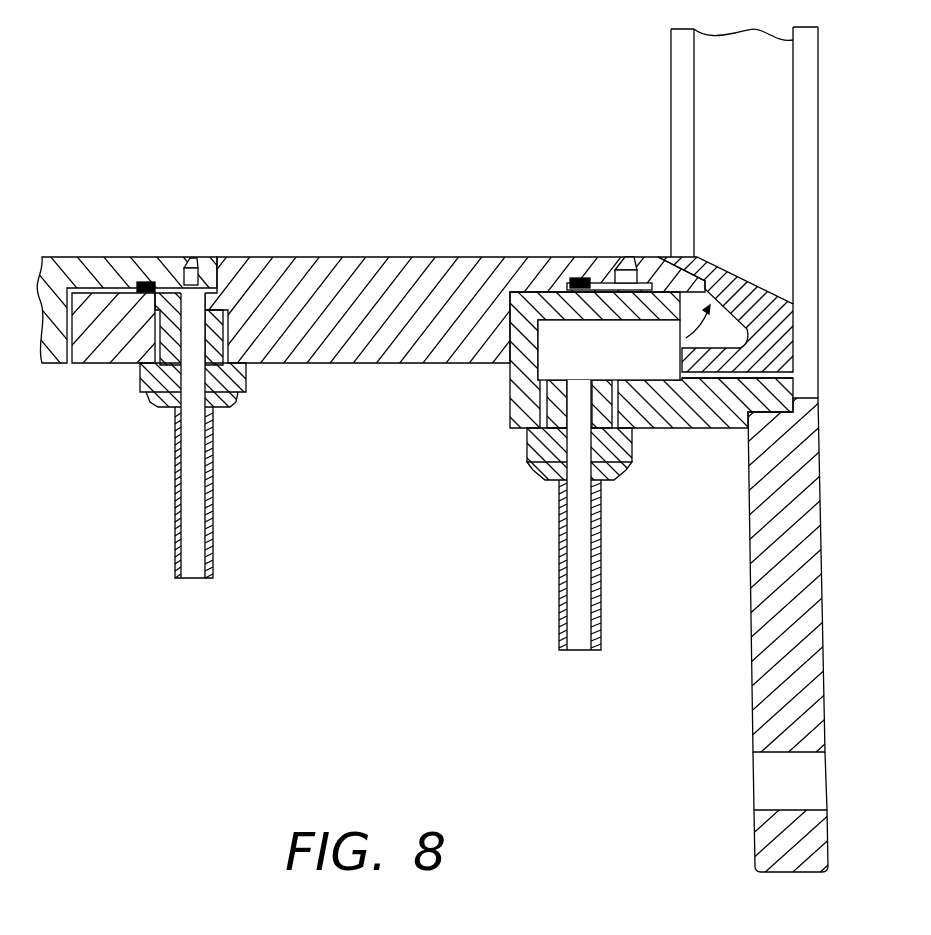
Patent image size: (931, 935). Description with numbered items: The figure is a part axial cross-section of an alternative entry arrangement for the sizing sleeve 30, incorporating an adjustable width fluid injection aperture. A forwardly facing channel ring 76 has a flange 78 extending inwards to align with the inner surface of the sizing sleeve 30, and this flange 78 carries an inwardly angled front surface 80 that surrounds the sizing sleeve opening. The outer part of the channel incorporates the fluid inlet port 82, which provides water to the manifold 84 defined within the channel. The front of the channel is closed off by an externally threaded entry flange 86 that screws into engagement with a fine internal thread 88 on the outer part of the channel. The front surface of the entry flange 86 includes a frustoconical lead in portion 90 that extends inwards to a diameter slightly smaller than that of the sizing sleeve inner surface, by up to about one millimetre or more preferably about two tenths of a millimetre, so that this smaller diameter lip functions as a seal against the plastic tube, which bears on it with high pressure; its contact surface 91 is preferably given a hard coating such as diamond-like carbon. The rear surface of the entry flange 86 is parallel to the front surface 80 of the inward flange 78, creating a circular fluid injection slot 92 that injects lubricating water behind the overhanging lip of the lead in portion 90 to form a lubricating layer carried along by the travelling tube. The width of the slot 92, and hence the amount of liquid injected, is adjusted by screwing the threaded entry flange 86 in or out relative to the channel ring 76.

The sizing sleeve 30 is at (345, 257).
The channel ring 76 is at (507, 380).
The flange 78 is at (670, 302).
The front surface 80 is at (725, 258).
The fluid inlet port 82 is at (553, 479).
The manifold 84 is at (609, 350).
The entry flange 86 is at (801, 313).
The internal thread 88 is at (705, 380).
The lead in portion 90 is at (760, 286).
The contact surface 91 is at (688, 268).
The slot 92 is at (674, 264).